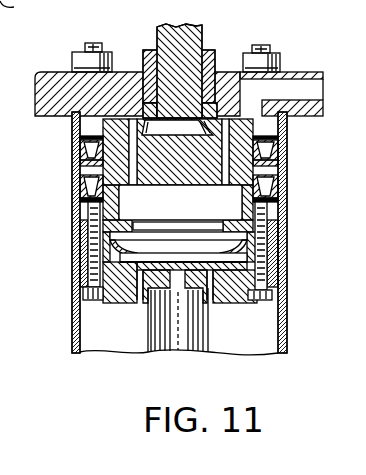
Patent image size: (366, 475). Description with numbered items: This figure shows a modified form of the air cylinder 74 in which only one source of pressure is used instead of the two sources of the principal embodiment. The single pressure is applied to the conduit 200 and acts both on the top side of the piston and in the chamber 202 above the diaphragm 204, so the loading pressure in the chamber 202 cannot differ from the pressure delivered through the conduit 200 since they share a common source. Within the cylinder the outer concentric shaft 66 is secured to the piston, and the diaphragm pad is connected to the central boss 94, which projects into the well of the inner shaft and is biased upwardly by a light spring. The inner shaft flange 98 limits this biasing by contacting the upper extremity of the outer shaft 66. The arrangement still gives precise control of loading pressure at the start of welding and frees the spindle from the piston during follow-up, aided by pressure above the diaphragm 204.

The conduit 200 is at (341, 47).
The chamber 202 is at (190, 213).
The diaphragm 204 is at (118, 250).
The inner shaft flange 98 is at (170, 280).
The central boss 94 is at (193, 280).
The air cylinder 74 is at (295, 326).
The outer concentric shaft 66 is at (177, 344).